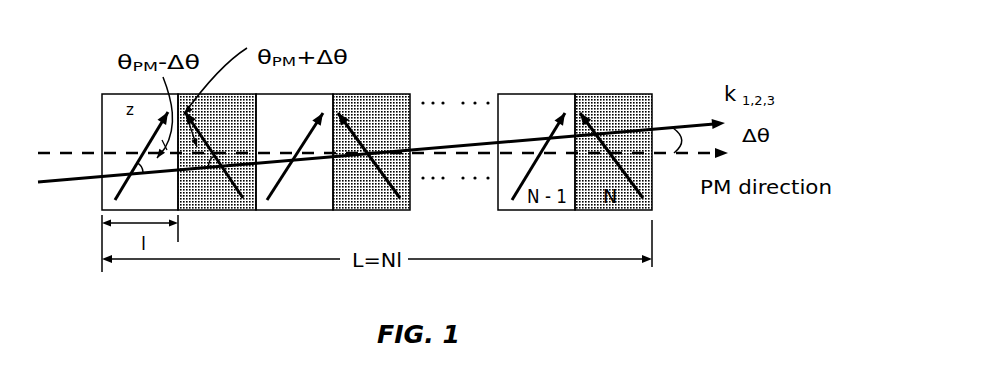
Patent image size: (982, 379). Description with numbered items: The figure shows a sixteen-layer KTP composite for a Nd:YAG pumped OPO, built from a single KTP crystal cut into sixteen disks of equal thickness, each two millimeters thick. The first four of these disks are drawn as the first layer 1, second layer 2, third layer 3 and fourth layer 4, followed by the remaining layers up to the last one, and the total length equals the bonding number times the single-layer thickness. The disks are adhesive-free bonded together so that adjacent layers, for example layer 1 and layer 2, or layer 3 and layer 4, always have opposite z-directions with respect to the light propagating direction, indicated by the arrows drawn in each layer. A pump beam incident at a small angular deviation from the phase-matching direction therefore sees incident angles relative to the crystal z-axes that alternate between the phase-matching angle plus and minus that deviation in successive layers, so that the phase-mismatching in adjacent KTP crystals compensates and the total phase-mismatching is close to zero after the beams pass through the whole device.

The first KTP disk layer 1 is at (140, 152).
The second KTP disk layer 2 is at (217, 152).
The third KTP disk layer 3 is at (294, 152).
The fourth KTP disk layer 4 is at (371, 152).